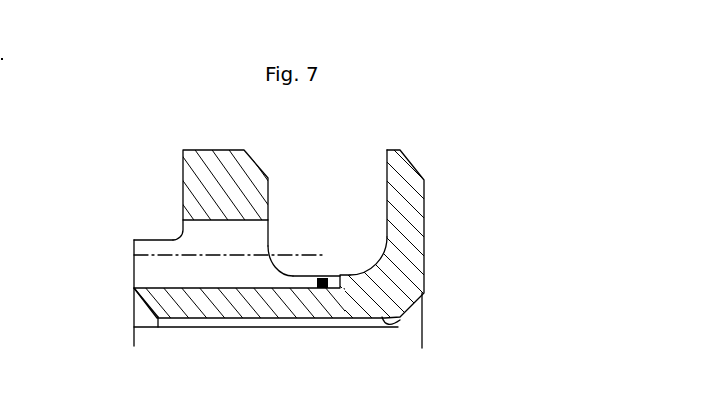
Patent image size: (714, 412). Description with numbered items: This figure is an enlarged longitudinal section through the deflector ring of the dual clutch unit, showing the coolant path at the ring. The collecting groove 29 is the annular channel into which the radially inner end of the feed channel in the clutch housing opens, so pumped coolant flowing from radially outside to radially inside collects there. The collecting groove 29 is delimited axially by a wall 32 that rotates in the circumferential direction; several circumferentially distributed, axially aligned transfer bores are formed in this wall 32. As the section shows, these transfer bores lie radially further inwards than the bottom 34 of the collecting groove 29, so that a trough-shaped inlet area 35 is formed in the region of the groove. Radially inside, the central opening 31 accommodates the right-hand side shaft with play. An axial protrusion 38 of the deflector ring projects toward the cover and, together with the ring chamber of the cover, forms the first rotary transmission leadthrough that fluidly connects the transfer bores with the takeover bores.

The collecting groove 29 is at (339, 236).
The central opening 31 is at (398, 325).
The wall 32 is at (203, 160).
The bottom 34 is at (350, 273).
The trough-shaped inlet area 35 is at (310, 277).
The axial protrusion 38 is at (150, 303).